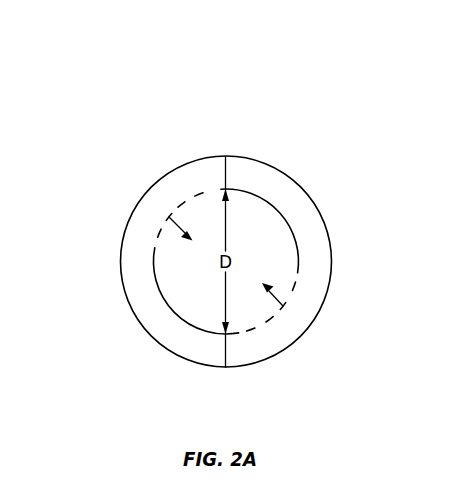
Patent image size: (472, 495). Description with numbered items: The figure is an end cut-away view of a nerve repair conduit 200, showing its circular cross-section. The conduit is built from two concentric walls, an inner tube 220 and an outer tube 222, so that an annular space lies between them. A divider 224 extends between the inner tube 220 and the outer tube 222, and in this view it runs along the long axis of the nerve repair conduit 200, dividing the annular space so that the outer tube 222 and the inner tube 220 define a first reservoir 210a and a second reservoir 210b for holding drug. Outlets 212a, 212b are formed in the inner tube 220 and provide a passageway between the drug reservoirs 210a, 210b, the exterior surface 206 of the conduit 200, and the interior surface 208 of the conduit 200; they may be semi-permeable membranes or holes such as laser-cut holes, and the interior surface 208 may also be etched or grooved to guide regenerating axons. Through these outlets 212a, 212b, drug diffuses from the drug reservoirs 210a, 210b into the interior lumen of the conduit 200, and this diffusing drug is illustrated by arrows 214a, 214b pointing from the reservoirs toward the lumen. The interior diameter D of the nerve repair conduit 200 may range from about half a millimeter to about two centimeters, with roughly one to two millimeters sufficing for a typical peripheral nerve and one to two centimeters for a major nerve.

The nerve repair conduit 200 is at (228, 90).
The exterior surface 206 is at (282, 210).
The interior surface 208 is at (183, 274).
The first reservoir 210a is at (168, 201).
The second reservoir 210b is at (302, 313).
The outlet 212a is at (197, 193).
The outlet 212b is at (271, 318).
The arrow 214a is at (153, 233).
The arrow 214b is at (293, 285).
The inner tube 220 is at (300, 257).
The outer tube 222 is at (327, 223).
The divider 224 is at (227, 175).